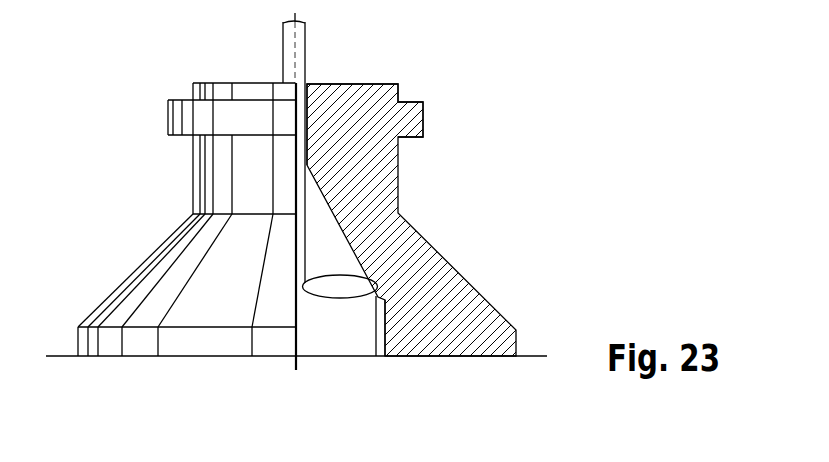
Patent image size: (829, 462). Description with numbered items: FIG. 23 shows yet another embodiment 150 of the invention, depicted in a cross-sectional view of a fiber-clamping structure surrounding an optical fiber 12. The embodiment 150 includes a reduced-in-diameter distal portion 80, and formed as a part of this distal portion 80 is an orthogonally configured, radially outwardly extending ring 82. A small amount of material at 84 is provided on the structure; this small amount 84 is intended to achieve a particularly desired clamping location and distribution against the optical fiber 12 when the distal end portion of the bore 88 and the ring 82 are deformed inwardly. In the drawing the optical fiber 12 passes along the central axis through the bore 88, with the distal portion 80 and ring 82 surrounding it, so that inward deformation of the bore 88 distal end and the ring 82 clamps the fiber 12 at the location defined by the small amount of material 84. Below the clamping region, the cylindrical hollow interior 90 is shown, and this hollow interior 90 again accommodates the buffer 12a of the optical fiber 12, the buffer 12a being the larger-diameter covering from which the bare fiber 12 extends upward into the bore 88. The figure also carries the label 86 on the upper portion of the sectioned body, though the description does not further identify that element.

The optical fiber 12 is at (307, 53).
The buffer 12a is at (378, 328).
The reduced-in-diameter distal portion 80 is at (400, 175).
The radially outwardly extending ring 82 is at (425, 122).
The small amount of material 84 is at (192, 91).
The hub top portion 86 is at (345, 84).
The bore 88 is at (305, 143).
The cylindrical hollow interior 90 is at (384, 311).
The embodiment 150 is at (137, 264).